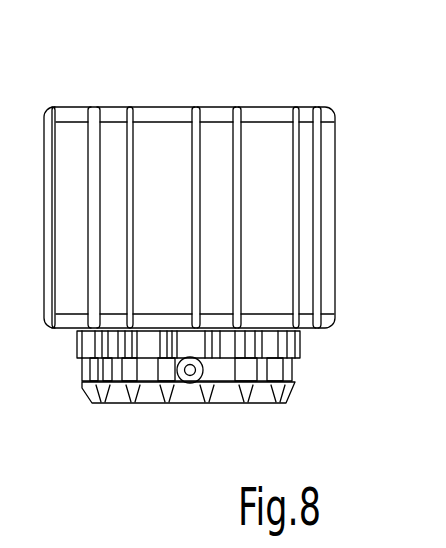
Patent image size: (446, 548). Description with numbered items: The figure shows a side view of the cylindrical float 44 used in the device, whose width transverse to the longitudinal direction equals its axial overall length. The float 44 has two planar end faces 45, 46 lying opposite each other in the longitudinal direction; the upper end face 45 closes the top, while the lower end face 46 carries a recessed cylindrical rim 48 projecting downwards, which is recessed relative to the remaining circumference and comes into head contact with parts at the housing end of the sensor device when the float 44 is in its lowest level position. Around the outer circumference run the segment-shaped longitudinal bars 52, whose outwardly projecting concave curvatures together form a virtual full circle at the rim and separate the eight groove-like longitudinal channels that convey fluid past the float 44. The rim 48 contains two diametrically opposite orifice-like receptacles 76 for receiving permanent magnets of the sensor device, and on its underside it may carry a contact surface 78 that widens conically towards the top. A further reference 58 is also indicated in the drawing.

The float 44 is at (300, 262).
The end face 45 is at (75, 107).
The lower end face 46 is at (113, 403).
The cylindrical rim 48 is at (300, 371).
The longitudinal bars 52 is at (255, 140).
The adjacent component 58 is at (445, 129).
The orifice-like receptacles 76 is at (190, 372).
The contact surface 78 is at (294, 395).